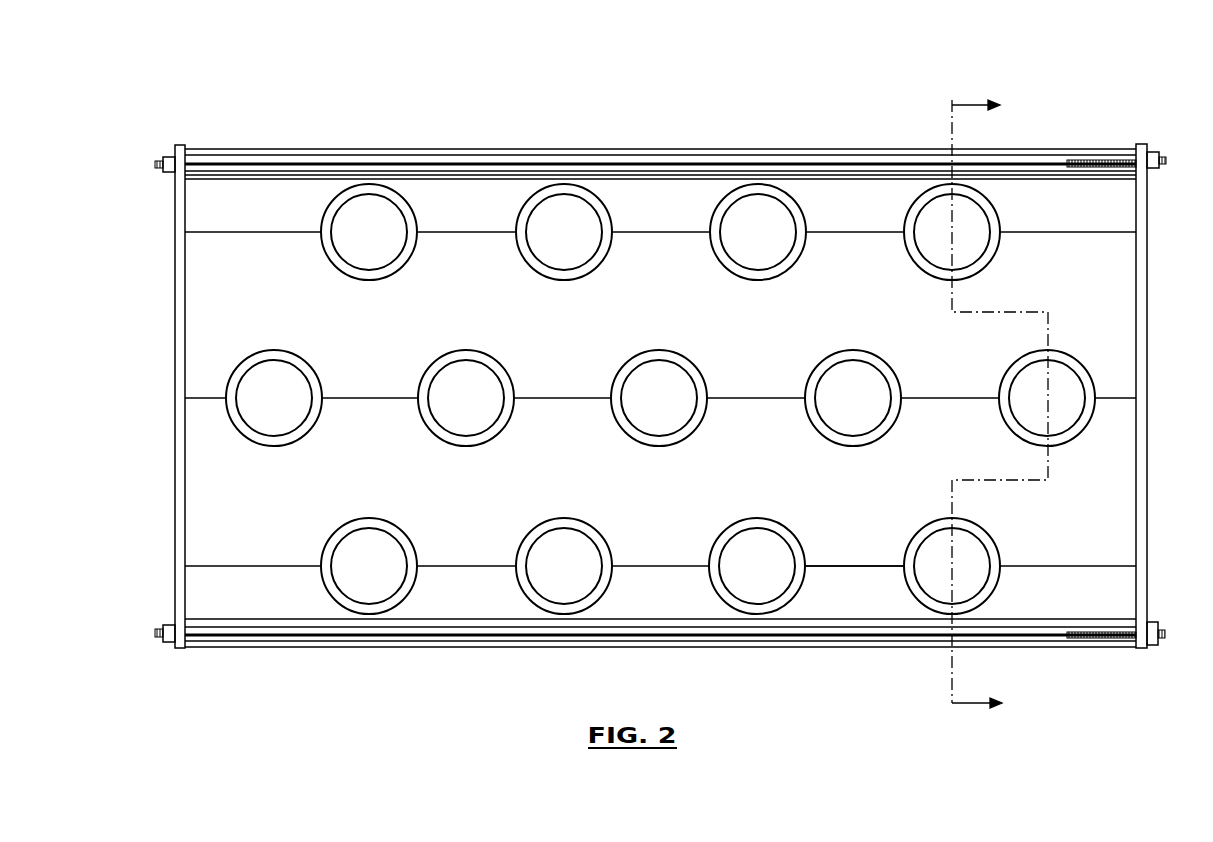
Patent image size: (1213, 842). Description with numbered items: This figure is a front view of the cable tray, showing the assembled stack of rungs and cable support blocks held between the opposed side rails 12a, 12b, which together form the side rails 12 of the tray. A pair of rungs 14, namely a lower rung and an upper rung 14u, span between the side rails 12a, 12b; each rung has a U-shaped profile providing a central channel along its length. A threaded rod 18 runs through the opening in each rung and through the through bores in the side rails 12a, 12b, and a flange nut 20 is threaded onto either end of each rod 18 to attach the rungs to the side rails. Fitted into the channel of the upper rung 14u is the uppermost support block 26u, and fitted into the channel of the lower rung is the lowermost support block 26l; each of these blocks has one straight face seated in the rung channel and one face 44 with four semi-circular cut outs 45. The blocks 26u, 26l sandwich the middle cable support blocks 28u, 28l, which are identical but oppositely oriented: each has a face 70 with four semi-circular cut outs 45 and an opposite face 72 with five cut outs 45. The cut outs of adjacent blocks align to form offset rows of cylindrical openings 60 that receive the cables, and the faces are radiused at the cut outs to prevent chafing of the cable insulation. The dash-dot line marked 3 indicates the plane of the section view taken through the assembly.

The side rails 12 is at (177, 507).
The side rail 12a is at (1147, 352).
The side rail 12b is at (174, 330).
The rungs 14 is at (290, 645).
The upper rung 14u is at (556, 152).
The rod 18 is at (722, 165).
The flange nut 20 is at (165, 152).
The uppermost support block 26u is at (195, 212).
The lowermost support block 26l is at (217, 594).
The cable support block 28u is at (276, 300).
The cable support block 28l is at (200, 443).
The face 44 is at (854, 565).
The semi-circular cut outs 45 is at (752, 555).
The cylindrical openings 60 is at (460, 377).
The face 70 is at (680, 230).
The face 72 is at (556, 400).
The section line 3- 3 is at (1000, 405).